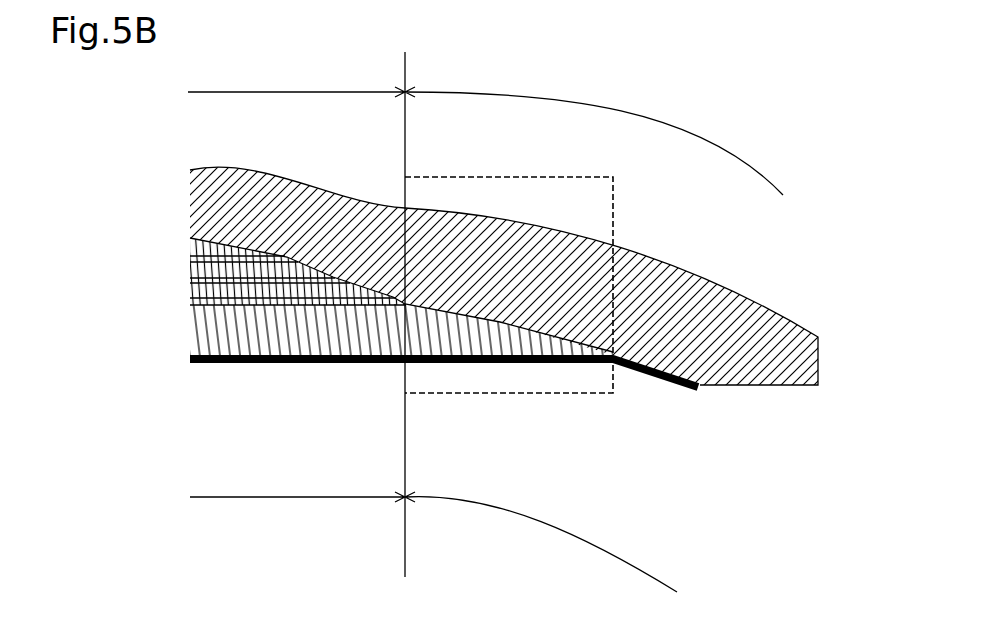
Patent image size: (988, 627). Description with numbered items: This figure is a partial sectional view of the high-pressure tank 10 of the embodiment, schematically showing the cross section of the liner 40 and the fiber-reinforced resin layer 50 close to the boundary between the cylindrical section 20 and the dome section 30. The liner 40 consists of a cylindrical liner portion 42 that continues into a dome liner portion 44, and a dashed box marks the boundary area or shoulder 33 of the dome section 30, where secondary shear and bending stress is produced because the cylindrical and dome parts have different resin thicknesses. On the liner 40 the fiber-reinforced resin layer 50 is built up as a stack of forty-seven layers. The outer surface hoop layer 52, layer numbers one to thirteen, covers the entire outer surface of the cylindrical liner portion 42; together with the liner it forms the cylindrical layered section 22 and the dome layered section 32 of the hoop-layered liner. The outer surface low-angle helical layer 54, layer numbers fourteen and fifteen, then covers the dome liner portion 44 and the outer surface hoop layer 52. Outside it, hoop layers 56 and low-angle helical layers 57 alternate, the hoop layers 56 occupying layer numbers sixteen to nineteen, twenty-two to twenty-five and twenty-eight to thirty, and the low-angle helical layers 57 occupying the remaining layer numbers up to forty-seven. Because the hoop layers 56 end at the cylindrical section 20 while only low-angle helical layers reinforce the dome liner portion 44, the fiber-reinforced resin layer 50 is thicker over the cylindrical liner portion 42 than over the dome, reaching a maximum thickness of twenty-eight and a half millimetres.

The high-pressure tank 10 is at (449, 286).
The cylindrical section 20 is at (296, 67).
The cylindrical layered section 22 is at (261, 532).
The dome section 30 is at (594, 126).
The dome layered section 32 is at (541, 546).
The boundary area (shoulder) 33 is at (615, 210).
The liner 40 is at (579, 429).
The cylindrical liner portion 42 is at (509, 366).
The dome liner portion 44 is at (630, 417).
The fiber-reinforced resin layer 50 is at (449, 274).
The outer surface hoop layer 52 is at (418, 361).
The outer surface low-angle helical layer 54 is at (190, 310).
The hoop layer 56 is at (189, 239).
The low-angle helical layer 57 is at (190, 171).